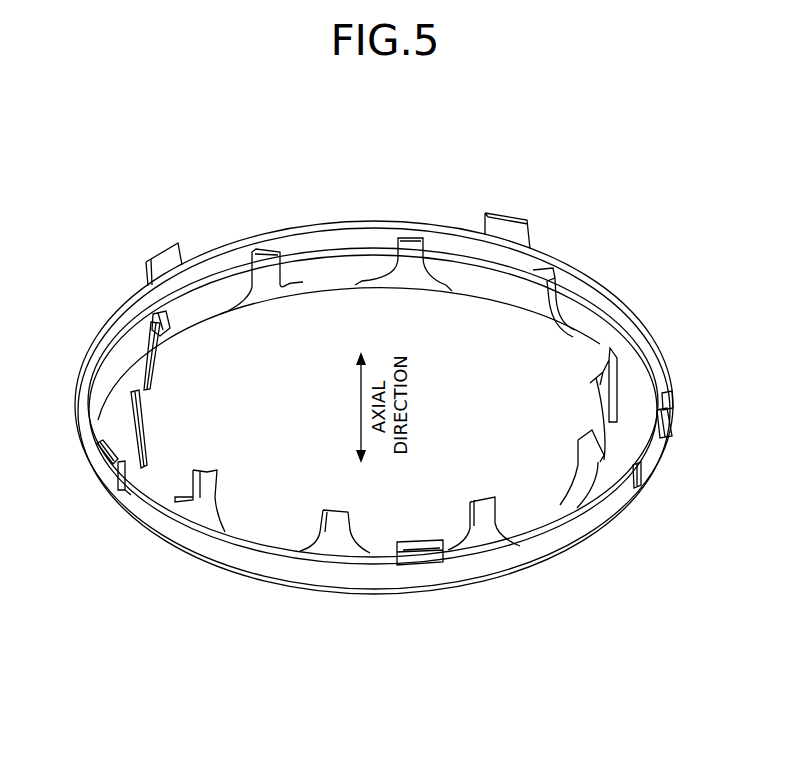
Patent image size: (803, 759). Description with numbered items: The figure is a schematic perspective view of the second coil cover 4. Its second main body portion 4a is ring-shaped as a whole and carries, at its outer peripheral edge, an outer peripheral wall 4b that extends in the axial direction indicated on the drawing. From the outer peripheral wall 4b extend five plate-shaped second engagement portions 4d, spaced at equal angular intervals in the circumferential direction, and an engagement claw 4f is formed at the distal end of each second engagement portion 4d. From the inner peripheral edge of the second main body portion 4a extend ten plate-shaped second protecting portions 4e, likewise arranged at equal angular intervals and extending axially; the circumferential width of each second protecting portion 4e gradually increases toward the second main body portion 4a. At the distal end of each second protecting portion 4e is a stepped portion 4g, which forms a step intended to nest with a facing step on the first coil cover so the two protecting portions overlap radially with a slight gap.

The second coil cover 4 is at (346, 178).
The second main body portion 4a is at (446, 598).
The outer peripheral wall 4b is at (262, 566).
The second engagement portion 4d is at (132, 475).
The second protecting portion 4e is at (142, 366).
The engagement claw 4f is at (102, 472).
The stepped portion 4g is at (188, 322).